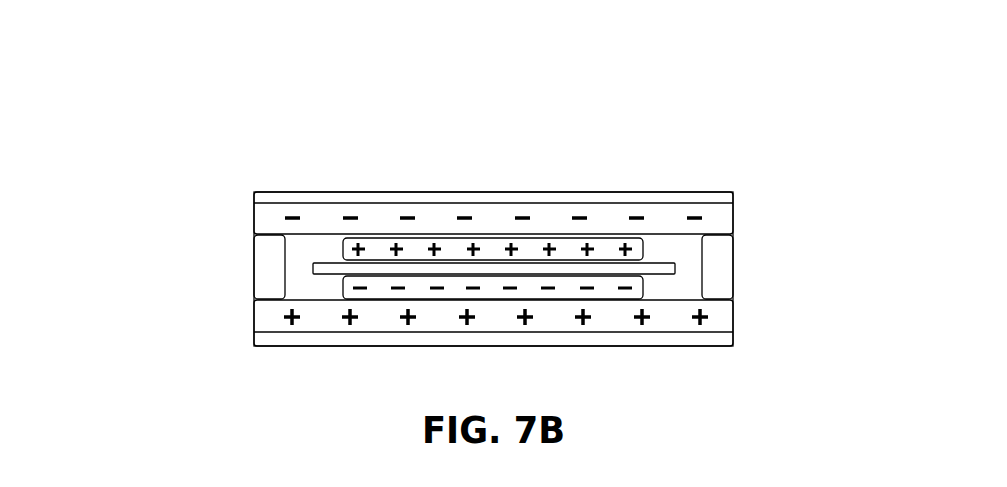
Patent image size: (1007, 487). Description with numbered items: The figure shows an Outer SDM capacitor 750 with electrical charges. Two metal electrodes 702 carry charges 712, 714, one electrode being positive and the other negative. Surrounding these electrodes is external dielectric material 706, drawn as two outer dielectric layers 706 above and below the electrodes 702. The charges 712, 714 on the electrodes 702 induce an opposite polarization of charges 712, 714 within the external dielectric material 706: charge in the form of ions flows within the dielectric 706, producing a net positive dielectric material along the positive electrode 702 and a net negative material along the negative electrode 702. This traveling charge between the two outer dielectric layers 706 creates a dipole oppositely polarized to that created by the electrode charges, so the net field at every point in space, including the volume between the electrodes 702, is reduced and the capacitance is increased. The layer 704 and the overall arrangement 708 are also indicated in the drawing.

The Outer SDM capacitor 750 is at (90, 87).
The layer stack 708 is at (253, 338).
The external dielectric material 706 is at (270, 234).
The charges 714 is at (577, 216).
The charges 712 is at (585, 318).
The electrodes 702 is at (343, 298).
The dielectric layer 704 is at (675, 268).